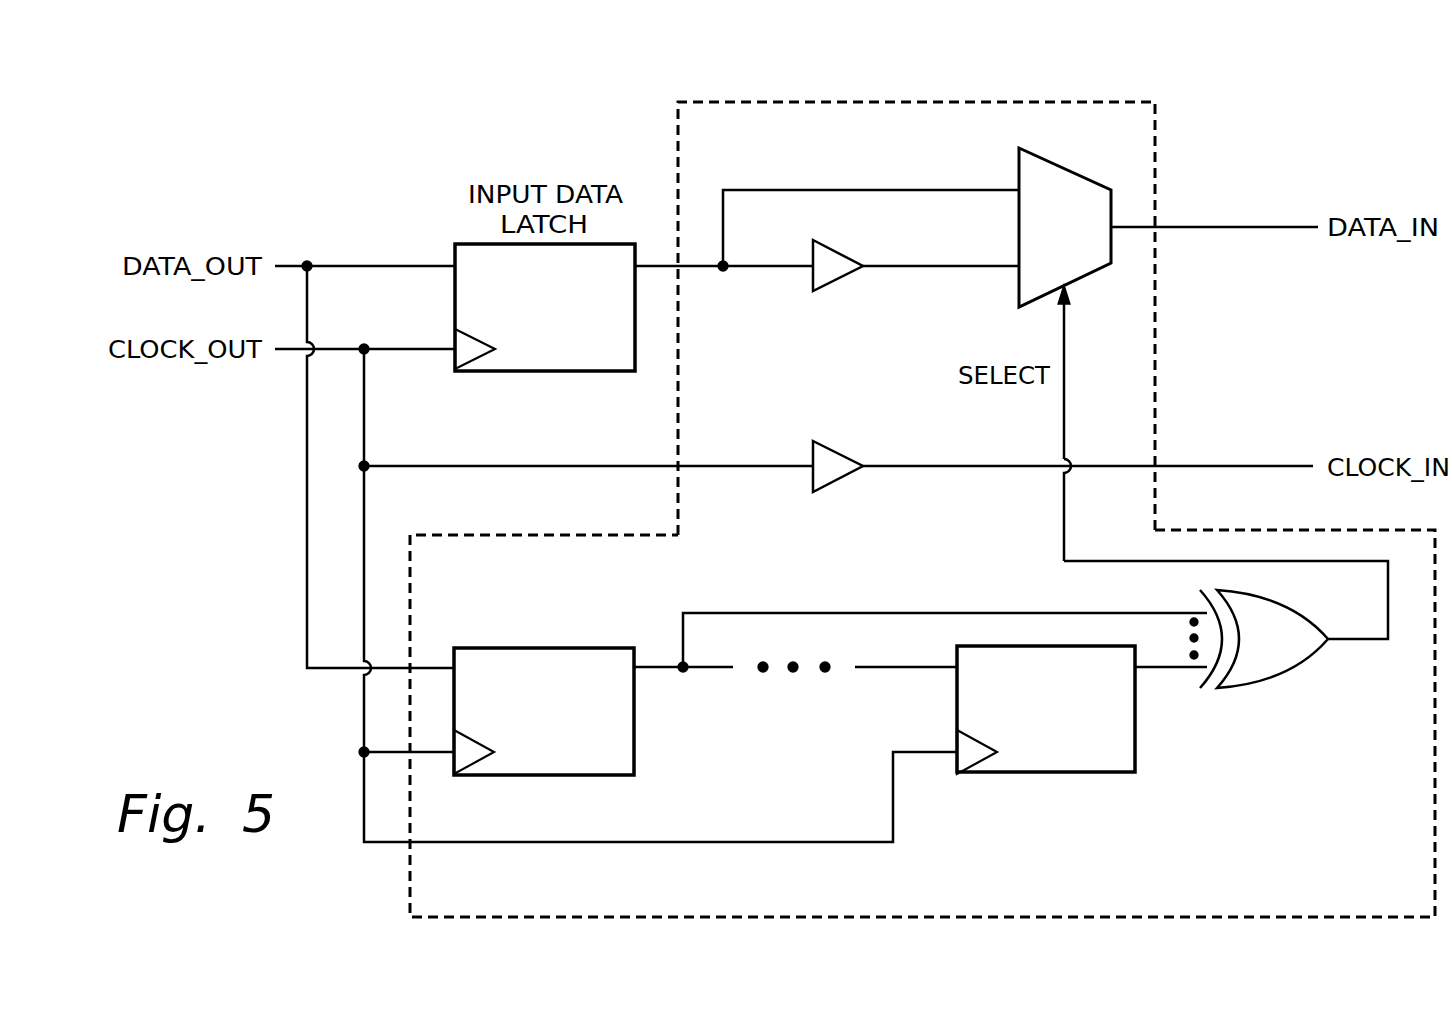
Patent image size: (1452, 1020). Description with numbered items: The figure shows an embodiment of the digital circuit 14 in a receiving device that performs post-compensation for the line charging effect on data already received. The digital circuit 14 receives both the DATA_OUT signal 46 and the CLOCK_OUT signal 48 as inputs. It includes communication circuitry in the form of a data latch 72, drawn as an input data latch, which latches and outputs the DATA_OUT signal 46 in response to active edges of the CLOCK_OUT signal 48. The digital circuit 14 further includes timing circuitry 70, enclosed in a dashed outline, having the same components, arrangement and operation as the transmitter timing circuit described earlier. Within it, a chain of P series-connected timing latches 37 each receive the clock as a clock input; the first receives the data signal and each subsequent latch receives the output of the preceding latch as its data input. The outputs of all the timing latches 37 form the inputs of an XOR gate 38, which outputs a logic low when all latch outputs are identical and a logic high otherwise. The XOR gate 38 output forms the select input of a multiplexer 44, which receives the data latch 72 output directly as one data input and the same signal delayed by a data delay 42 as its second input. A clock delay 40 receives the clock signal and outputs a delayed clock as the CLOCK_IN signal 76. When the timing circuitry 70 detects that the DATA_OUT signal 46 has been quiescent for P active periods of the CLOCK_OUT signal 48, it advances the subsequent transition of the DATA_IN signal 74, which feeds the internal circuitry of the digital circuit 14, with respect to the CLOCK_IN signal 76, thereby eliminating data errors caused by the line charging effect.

The digital circuit 14 is at (1245, 94).
The timing latch 37 is at (608, 750).
The XOR gate 38 is at (1278, 676).
The clock delay 40 is at (840, 442).
The data delay 42 is at (840, 242).
The multiplexer 44 is at (1102, 240).
The DATA_OUT signal 46 is at (373, 267).
The CLOCK_OUT signal 48 is at (408, 350).
The timing circuitry 70 is at (1386, 864).
The data latch 72 is at (608, 347).
The DATA_IN signal 74 is at (1270, 228).
The CLOCK_IN signal 76 is at (1268, 467).